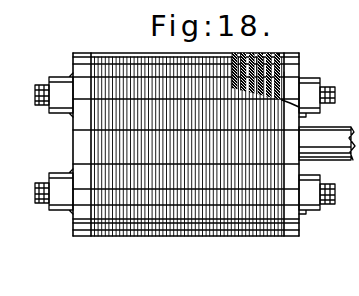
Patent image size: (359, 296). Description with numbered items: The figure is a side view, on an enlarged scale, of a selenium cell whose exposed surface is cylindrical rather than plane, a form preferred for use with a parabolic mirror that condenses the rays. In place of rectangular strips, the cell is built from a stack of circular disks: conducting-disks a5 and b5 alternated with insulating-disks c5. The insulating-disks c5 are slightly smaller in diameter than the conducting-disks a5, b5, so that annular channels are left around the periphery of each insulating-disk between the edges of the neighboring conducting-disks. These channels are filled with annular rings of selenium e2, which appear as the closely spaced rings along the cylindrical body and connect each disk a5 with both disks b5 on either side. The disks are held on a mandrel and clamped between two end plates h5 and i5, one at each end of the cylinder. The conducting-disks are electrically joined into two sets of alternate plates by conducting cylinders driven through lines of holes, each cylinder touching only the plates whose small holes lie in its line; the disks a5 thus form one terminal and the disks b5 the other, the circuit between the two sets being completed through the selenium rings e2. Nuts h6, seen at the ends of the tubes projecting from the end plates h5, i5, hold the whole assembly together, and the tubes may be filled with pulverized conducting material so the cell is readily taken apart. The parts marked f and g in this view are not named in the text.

The conducting-disk a5 is at (280, 53).
The conducting-disk b5 is at (237, 52).
The insulating-disk c5 is at (285, 72).
The annular rings of selenium e2 is at (96, 54).
The shaft f is at (334, 89).
The nut g is at (335, 199).
The end plate h5 is at (301, 169).
The nuts h6 is at (59, 78).
The end plate i5 is at (72, 146).